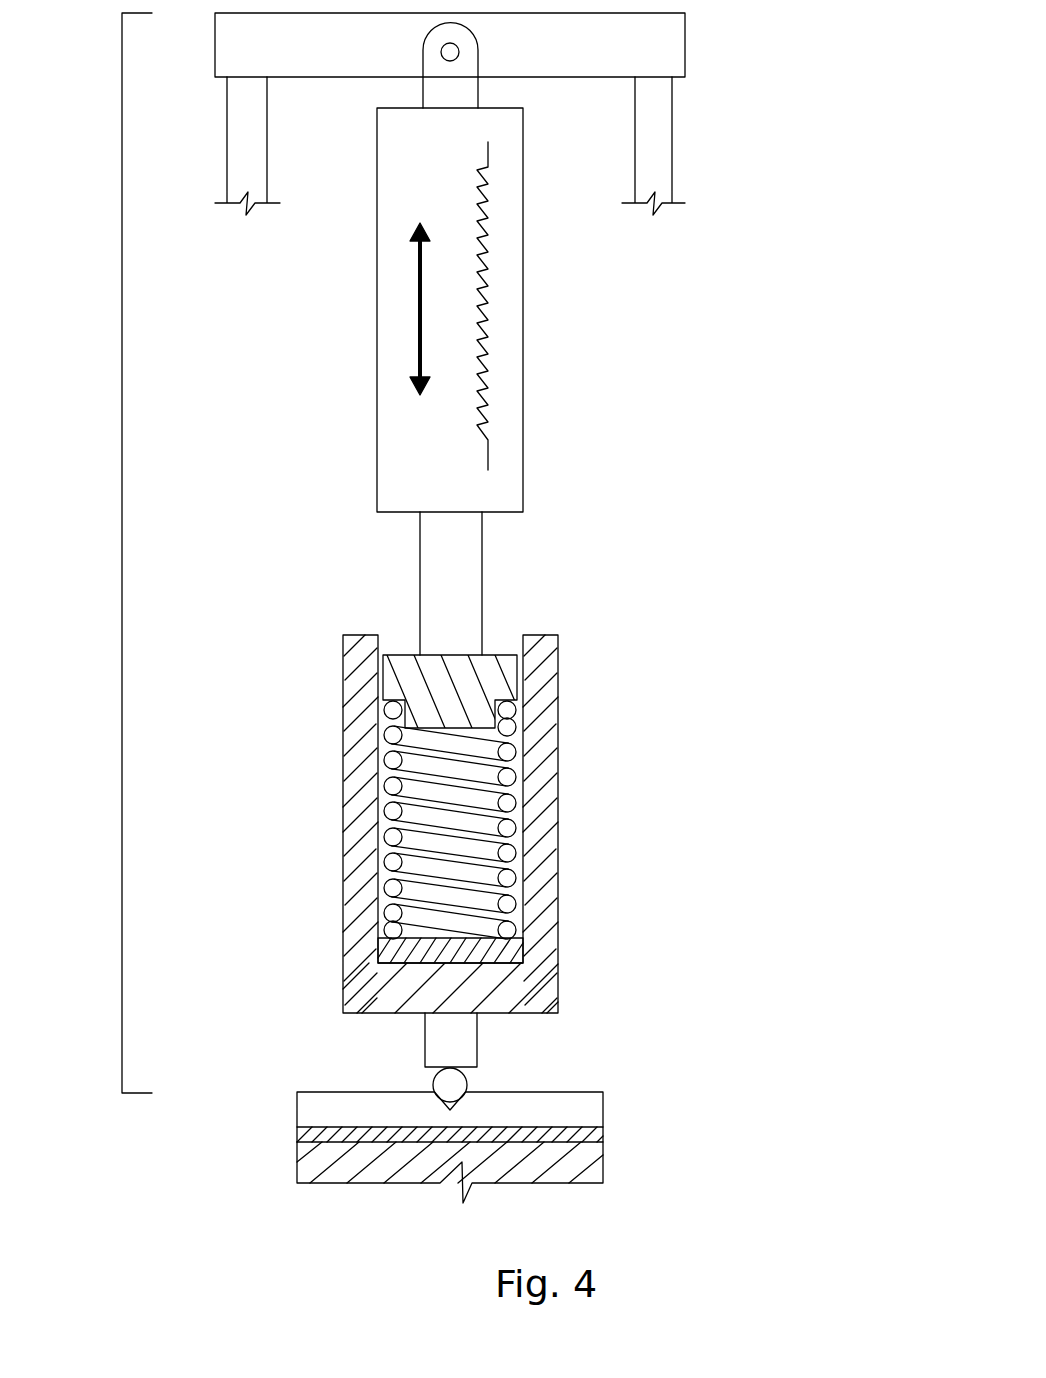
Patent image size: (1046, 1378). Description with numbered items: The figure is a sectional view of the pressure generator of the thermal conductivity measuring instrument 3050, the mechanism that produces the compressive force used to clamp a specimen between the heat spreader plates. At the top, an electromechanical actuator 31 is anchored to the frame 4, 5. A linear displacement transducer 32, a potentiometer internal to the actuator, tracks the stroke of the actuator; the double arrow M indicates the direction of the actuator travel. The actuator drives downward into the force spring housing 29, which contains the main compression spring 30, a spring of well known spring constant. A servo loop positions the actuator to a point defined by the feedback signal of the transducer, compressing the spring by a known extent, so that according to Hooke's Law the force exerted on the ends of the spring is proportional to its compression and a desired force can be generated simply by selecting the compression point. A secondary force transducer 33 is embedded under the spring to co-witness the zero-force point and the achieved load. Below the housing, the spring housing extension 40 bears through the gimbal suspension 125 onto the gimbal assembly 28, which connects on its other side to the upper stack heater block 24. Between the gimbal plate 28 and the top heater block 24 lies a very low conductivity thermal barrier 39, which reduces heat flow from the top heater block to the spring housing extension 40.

The thermal conductivity measuring instrument 3050 is at (122, 648).
The frame 5 is at (668, 38).
The frame 4 is at (662, 142).
The electromechanical actuator 31 is at (397, 422).
The linear displacement transducer 32 is at (483, 315).
The direction of motion M is at (417, 310).
The force spring housing 29 is at (540, 738).
The compression spring 30 is at (507, 830).
The force transducer 33 is at (513, 952).
The spring housing extension 40 is at (467, 1040).
The gimbal suspension 125 is at (437, 1082).
The gimbal assembly 28 is at (588, 1110).
The thermal barrier 39 is at (603, 1137).
The upper stack heater block 24 is at (320, 1162).